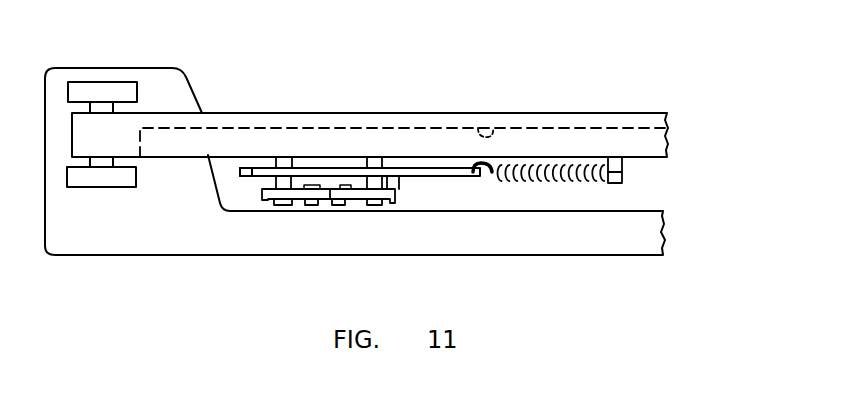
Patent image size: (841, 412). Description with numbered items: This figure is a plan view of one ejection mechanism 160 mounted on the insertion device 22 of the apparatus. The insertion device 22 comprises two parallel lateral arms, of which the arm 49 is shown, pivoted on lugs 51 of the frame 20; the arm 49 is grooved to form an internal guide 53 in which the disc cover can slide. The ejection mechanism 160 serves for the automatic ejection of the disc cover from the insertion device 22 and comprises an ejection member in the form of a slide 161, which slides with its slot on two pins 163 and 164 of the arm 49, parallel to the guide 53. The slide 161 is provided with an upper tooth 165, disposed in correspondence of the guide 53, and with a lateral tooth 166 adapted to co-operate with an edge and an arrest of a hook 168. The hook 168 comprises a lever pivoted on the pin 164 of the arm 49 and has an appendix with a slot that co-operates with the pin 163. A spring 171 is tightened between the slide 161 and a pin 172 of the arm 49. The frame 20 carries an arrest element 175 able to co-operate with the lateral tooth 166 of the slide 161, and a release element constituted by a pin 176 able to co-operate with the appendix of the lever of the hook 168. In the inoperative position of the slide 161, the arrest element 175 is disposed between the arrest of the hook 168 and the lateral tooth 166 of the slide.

The frame 20 is at (140, 243).
The insertion device 22 is at (641, 98).
The lateral arm 49 is at (667, 139).
The lug 51 is at (96, 90).
The guide 53 is at (499, 127).
The ejection mechanism 160 is at (297, 232).
The slide 161 is at (420, 168).
The pin 163 is at (287, 164).
The pin 164 is at (376, 164).
The upper tooth 165 is at (243, 168).
The lateral tooth 166 is at (396, 190).
The hook 168 is at (331, 193).
The spring 171 is at (553, 176).
The pin 172 is at (622, 175).
The arrest element 175 is at (345, 203).
The pin 176 is at (303, 205).